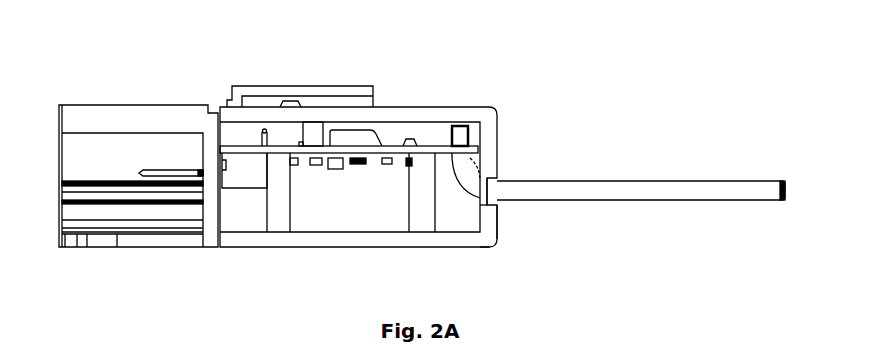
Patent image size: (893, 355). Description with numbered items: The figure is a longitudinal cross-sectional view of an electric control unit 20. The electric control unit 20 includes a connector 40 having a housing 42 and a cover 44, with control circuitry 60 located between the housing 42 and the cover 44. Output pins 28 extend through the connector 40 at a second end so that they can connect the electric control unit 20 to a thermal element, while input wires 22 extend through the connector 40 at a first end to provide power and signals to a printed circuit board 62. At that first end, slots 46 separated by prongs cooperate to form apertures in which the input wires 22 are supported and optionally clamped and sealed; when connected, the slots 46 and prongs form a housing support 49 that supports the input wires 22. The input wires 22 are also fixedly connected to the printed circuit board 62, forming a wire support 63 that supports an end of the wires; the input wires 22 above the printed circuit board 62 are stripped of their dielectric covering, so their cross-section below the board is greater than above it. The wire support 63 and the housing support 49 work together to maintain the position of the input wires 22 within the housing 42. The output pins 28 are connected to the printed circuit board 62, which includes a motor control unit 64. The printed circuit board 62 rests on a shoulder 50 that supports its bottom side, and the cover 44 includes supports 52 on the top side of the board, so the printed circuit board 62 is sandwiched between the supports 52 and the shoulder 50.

The electric control unit 20 is at (524, 80).
The input wires 22 is at (686, 224).
The output pins 28 is at (149, 160).
The connector 40 is at (499, 147).
The housing 42 is at (260, 251).
The cover 44 is at (380, 112).
The slots 46 is at (516, 222).
The housing support 49 is at (500, 184).
The shoulder 50 is at (422, 210).
The supports 52 is at (303, 135).
The control circuitry 60 is at (424, 129).
The printed circuit board 62 is at (421, 158).
The wire support 63 is at (460, 163).
The motor control unit 64 is at (355, 134).